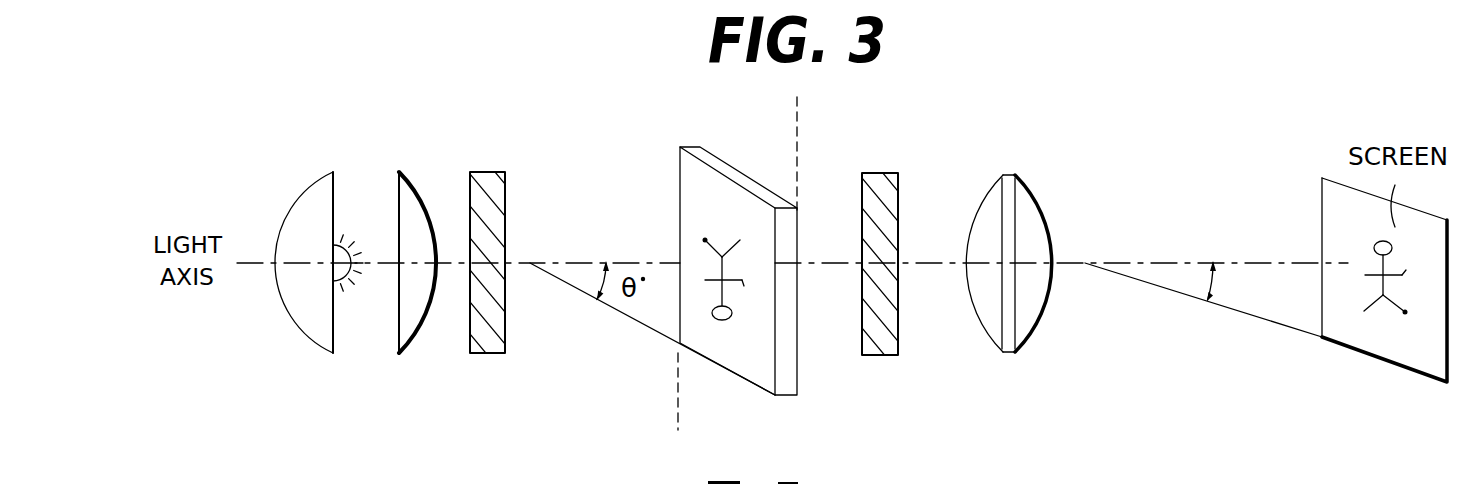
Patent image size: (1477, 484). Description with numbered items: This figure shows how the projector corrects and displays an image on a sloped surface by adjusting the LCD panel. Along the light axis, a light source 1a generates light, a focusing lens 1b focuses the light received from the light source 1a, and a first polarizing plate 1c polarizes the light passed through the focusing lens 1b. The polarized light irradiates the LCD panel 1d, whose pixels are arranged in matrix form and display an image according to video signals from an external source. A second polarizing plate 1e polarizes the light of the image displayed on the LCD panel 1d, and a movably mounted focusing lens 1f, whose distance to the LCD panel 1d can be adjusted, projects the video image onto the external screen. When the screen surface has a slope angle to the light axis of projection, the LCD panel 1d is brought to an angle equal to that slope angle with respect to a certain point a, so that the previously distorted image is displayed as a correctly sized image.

The light source 1a is at (311, 197).
The focusing lens 1b is at (408, 200).
The first polarizing plate 1c is at (492, 186).
The liquid crystal display (LCD) panel 1d is at (735, 184).
The second polarizing plate 1e is at (882, 190).
The focusing lens 1f is at (993, 193).
The certain point a is at (671, 405).